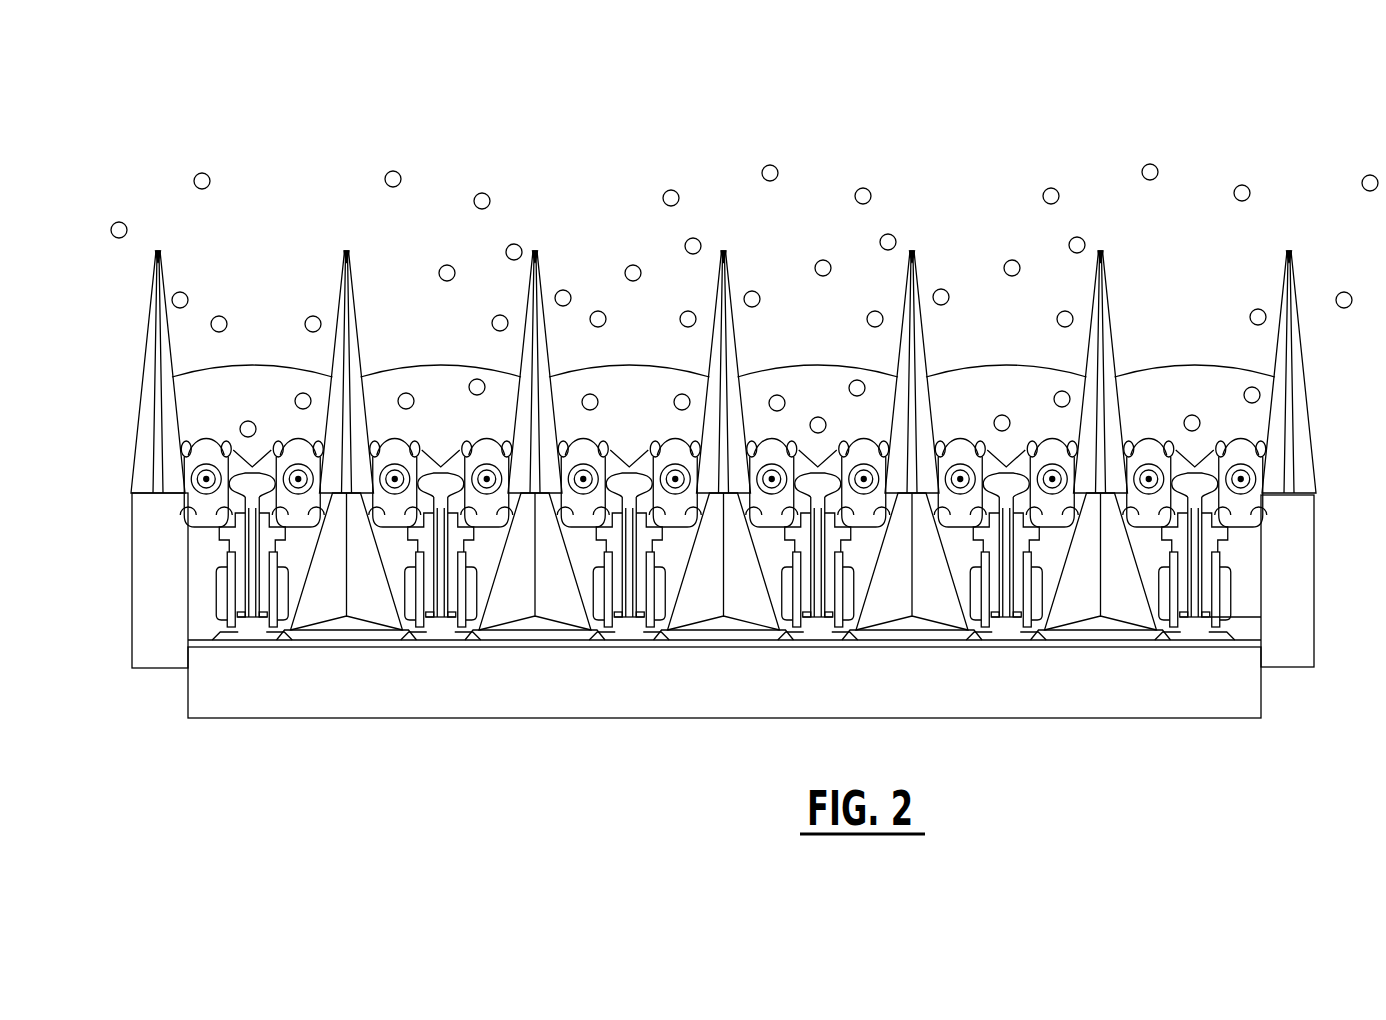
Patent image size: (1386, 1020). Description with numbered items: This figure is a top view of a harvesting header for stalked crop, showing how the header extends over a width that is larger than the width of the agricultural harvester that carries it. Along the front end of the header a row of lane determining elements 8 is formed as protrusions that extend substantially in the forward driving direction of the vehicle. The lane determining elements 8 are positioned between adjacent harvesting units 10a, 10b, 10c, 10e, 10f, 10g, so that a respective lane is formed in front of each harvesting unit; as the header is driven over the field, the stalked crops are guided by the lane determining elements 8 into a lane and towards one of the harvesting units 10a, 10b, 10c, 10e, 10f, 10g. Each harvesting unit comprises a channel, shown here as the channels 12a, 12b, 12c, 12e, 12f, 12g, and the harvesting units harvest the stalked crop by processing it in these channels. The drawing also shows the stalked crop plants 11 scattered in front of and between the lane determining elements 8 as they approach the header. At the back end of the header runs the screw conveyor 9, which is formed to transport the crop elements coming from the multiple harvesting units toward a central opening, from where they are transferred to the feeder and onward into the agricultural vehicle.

The lane determining element 8 is at (150, 305).
The screw conveyor 9 is at (333, 698).
The harvesting unit 10a is at (252, 355).
The harvesting unit 10b is at (441, 355).
The harvesting unit 10c is at (629, 355).
The harvesting unit 10e is at (946, 355).
The harvesting unit 10f is at (1132, 355).
The harvesting unit 10g is at (1205, 348).
The particles 11 is at (1080, 239).
The channel 12a is at (248, 590).
The channel 12b is at (443, 593).
The channel 12c is at (632, 593).
The channel 12e is at (815, 592).
The channel 12f is at (1003, 592).
The channel 12g is at (1193, 600).